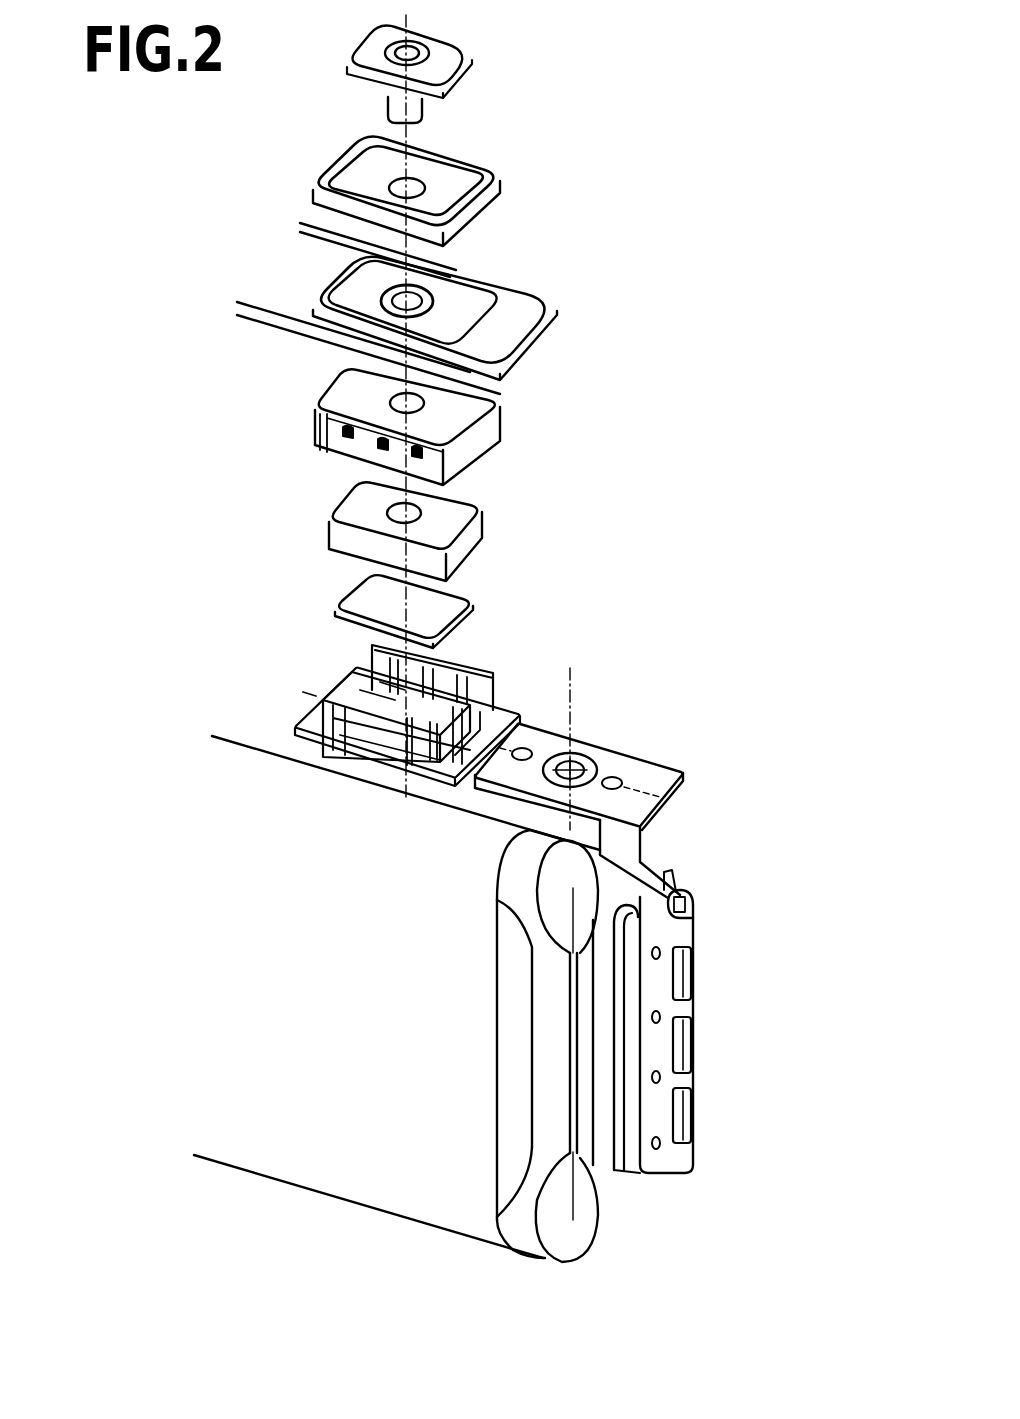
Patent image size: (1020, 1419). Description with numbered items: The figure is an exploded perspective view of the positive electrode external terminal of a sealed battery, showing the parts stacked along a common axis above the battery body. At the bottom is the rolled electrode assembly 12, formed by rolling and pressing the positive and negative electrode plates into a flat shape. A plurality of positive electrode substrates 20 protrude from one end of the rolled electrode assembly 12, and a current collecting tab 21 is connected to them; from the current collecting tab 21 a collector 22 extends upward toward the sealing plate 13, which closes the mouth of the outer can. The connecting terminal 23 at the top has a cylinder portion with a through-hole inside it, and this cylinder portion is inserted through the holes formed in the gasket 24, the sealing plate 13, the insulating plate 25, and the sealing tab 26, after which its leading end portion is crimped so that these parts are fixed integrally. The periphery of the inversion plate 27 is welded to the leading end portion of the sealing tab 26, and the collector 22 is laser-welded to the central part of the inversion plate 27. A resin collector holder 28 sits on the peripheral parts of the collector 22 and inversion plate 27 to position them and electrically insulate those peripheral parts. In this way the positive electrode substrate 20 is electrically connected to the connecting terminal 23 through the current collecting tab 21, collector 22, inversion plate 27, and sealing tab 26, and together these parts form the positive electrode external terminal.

The rolled electrode assembly 12 is at (309, 1128).
The sealing plate 13 is at (513, 308).
The positive electrode substrate 20 is at (557, 1132).
The current collecting tab 21 is at (673, 925).
The collector 22 is at (613, 763).
The connecting terminal 23 is at (448, 62).
The gasket 24 is at (473, 187).
The insulating plate 25 is at (470, 413).
The sealing tab 26 is at (463, 517).
The inversion plate 27 is at (447, 613).
The collector holder 28 is at (387, 662).